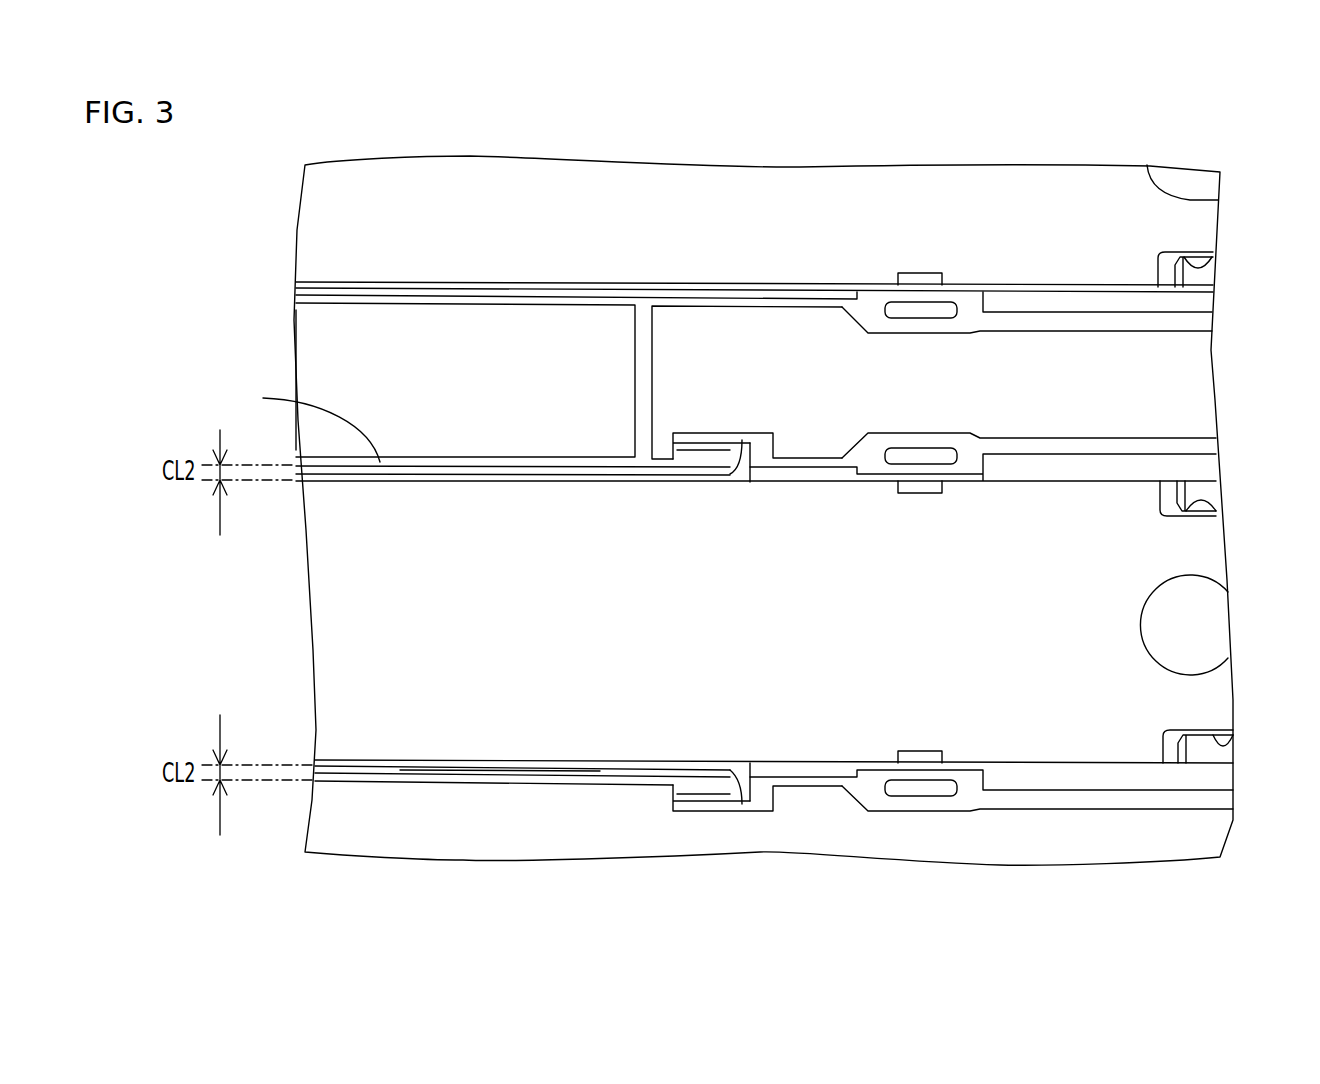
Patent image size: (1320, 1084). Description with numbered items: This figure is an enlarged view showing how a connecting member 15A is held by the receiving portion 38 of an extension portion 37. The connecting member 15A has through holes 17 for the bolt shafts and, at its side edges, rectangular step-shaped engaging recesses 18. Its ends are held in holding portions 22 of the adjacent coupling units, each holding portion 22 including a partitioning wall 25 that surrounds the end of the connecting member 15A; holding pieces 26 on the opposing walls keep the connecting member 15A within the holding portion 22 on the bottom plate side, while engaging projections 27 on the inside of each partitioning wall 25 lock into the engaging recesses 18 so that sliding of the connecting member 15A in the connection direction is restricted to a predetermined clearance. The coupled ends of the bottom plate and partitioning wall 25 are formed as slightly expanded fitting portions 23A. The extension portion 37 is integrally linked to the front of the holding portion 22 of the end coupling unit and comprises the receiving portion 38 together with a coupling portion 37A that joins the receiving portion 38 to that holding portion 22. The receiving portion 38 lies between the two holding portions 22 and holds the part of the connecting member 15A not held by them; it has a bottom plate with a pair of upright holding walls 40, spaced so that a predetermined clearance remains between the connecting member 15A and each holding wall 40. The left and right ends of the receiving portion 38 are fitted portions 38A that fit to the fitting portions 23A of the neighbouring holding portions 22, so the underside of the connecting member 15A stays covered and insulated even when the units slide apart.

The connecting member 15A is at (547, 722).
The through hole 17 is at (1203, 575).
The engaging recess 18 is at (1185, 263).
The holding portion 22 is at (1177, 351).
The fitting portion 23A is at (715, 437).
The partitioning wall 25 is at (1190, 323).
The holding piece 26 is at (921, 283).
The engaging projection 27 is at (1198, 277).
The extension portion 37 is at (419, 318).
The coupling portion 37A is at (328, 348).
The receiving portion 38 is at (484, 808).
The fitted portion 38A is at (742, 440).
The holding wall 40 is at (408, 875).